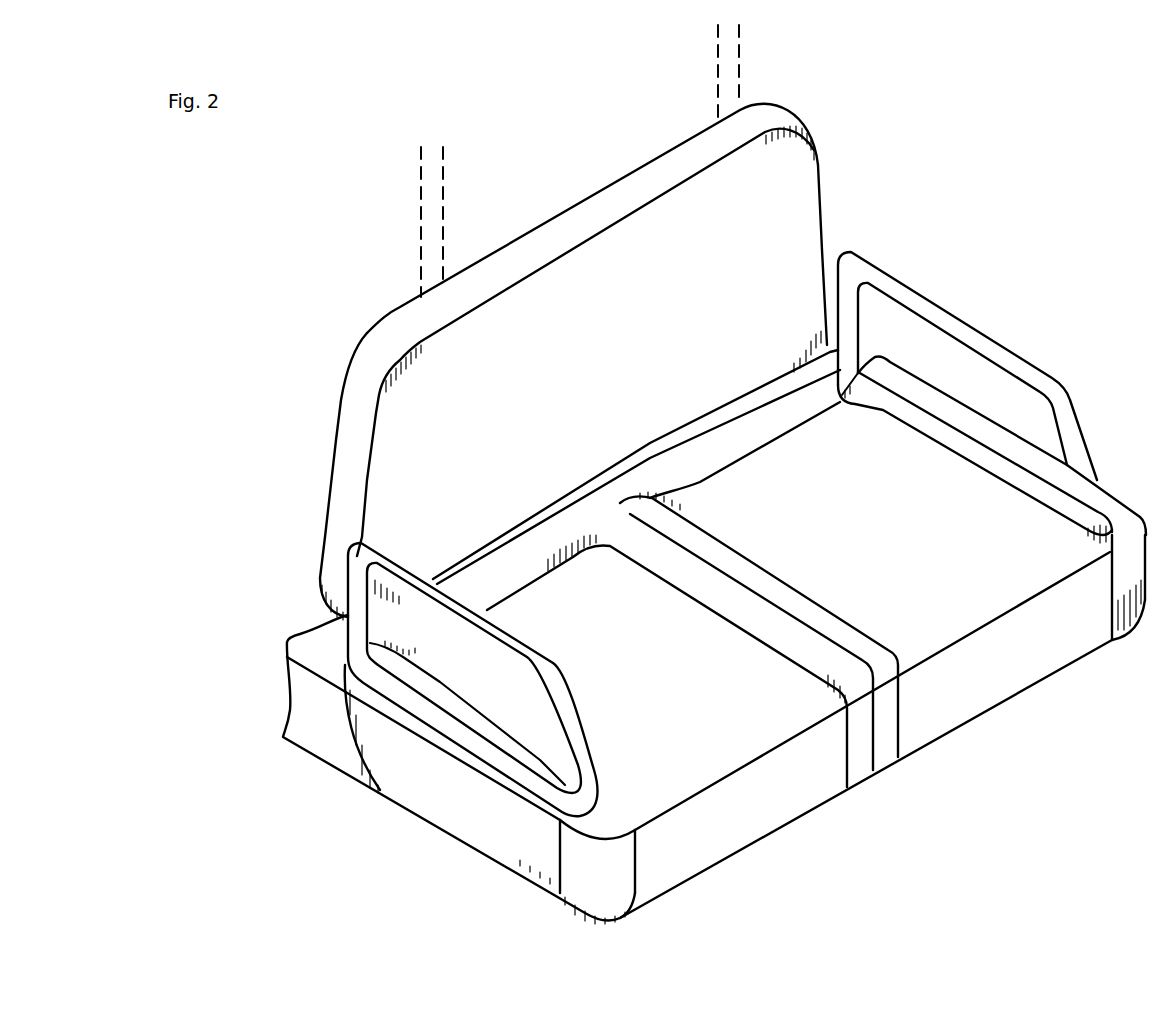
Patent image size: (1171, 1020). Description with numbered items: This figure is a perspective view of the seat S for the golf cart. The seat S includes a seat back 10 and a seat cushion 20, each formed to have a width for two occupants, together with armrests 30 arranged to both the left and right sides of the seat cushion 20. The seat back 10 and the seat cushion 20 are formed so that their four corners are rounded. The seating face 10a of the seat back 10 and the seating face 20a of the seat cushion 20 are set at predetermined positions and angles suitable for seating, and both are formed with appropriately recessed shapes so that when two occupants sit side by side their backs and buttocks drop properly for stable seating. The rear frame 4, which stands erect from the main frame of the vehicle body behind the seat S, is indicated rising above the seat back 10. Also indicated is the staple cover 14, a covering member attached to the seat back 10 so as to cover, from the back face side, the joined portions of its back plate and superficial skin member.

The seat S is at (316, 199).
The rear frame 4 is at (718, 85).
The seat back 10 is at (816, 150).
The seating face of the seat back 10a is at (420, 368).
The staple cover 14 is at (340, 435).
The seat cushion 20 is at (1030, 687).
The seating face of the seat cushion 20a is at (755, 755).
The armrests 30 is at (965, 297).